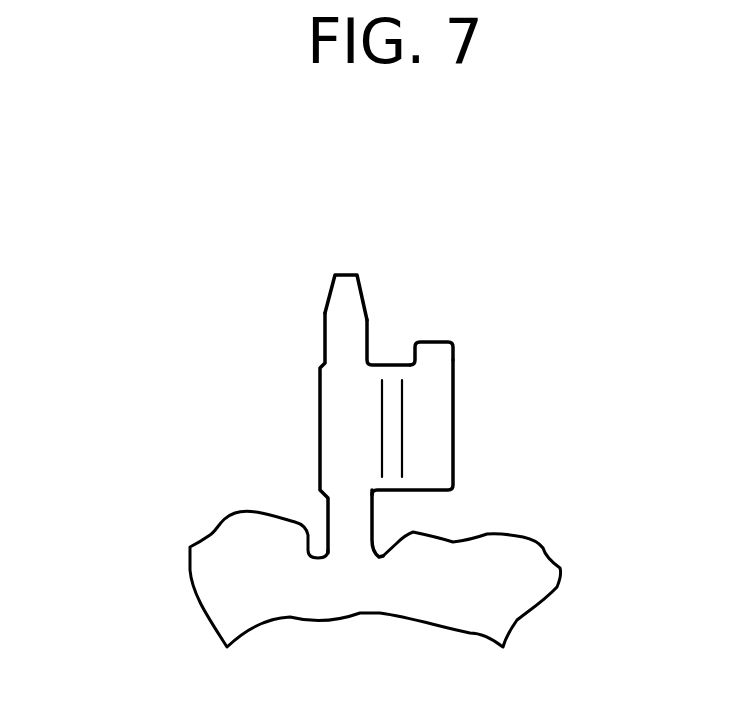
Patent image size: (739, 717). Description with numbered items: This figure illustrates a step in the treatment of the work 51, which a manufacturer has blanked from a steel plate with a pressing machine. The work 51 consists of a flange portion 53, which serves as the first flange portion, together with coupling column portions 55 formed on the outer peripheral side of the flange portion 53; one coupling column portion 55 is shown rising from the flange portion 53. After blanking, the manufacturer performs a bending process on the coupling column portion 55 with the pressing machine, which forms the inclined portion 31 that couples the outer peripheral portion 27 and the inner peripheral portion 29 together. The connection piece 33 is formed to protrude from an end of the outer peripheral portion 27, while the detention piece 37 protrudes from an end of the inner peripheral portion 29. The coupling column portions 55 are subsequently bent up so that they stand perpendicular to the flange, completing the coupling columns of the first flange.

The outer peripheral portion 27 is at (340, 402).
The inner peripheral portion 29 is at (435, 415).
The inclined portion 31 is at (393, 388).
The connection piece 33 is at (342, 308).
The detention piece 37 is at (433, 358).
The work 51 is at (134, 408).
The flange portion 53 is at (527, 557).
The coupling column portion 55 is at (500, 336).